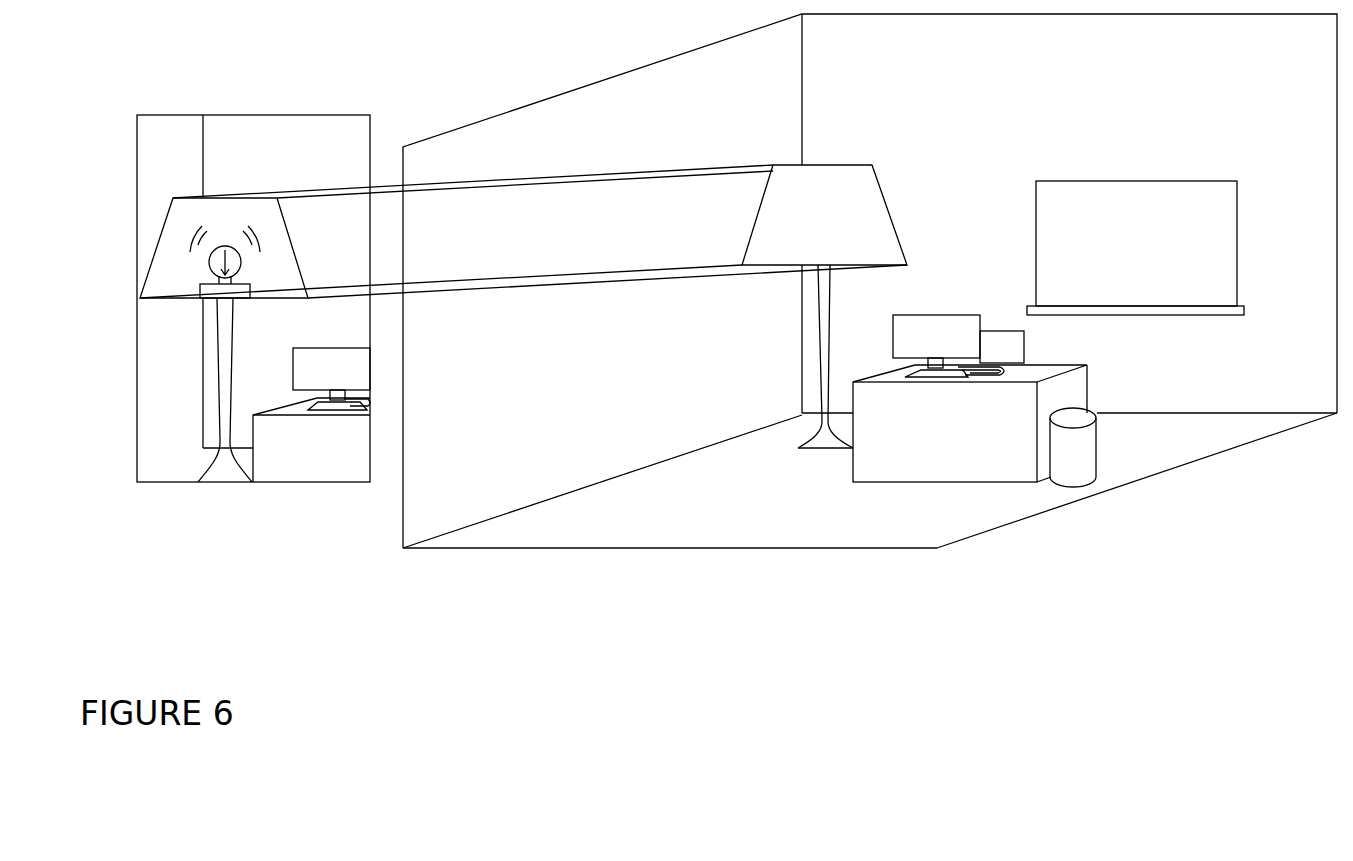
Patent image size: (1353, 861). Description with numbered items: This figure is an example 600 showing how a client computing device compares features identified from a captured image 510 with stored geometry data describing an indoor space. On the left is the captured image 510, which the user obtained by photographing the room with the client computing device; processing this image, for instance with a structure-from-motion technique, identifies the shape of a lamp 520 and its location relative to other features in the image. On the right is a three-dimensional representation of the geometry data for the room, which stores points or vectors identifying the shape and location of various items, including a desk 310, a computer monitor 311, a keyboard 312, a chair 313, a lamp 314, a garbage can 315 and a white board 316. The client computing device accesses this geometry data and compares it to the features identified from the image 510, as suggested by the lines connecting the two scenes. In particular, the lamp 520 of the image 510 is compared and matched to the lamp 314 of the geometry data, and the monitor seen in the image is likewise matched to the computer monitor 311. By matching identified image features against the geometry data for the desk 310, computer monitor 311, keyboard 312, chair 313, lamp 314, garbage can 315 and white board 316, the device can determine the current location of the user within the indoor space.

The example 600 is at (174, 675).
The captured image 510 is at (165, 482).
The lamp 520 is at (170, 215).
The lamp 314 is at (756, 217).
The desk 310 is at (853, 482).
The computer monitor 311 is at (953, 313).
The keyboard 312 is at (998, 367).
The chair 313 is at (1025, 350).
The white board 316 is at (1238, 248).
The garbage can 315 is at (1097, 455).